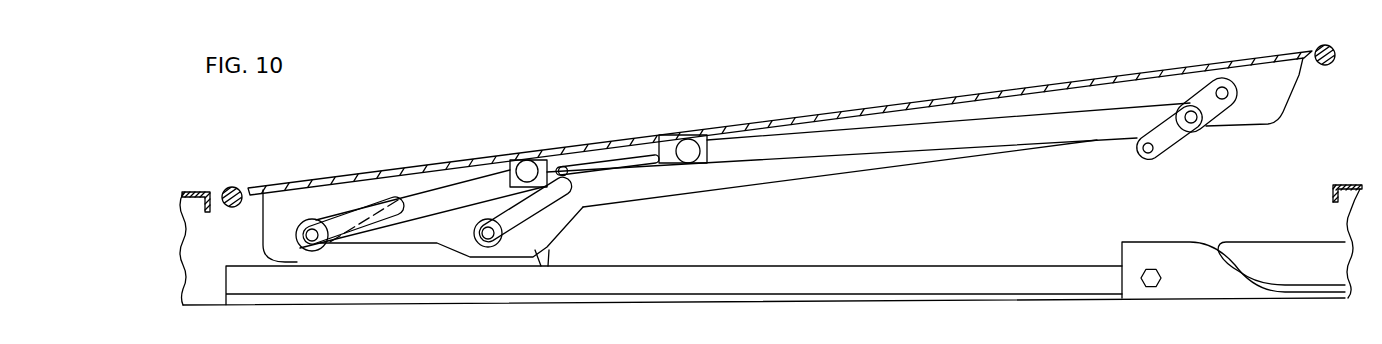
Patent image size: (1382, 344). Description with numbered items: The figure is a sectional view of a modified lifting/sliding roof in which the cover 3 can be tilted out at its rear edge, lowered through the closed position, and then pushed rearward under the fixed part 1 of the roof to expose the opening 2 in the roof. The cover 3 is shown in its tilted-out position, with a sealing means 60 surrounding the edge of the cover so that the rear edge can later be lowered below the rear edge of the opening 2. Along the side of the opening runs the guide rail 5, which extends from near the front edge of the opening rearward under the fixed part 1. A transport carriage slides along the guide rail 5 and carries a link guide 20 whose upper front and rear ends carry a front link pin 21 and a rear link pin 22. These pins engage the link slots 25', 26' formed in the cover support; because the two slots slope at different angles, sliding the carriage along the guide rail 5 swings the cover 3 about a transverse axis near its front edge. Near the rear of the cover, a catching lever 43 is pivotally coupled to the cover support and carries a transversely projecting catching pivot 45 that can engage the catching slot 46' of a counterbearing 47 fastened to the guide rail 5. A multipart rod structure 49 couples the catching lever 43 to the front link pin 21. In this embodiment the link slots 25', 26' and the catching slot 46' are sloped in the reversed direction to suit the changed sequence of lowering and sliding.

The cover 3 is at (905, 102).
The sealing means 60 is at (1330, 66).
The fixed part of the roof 1 is at (1346, 185).
The opening in the roof 2 is at (1276, 197).
The counterbearing 47 is at (1137, 250).
The catching slot 46' is at (1276, 290).
The guide rail 5 is at (813, 290).
The rod structure 49 is at (657, 188).
The catching lever 43 is at (1170, 140).
The catching pivot 45 is at (1140, 152).
The link guide 20 is at (411, 186).
The link slot 25' is at (353, 187).
The link pin 21 is at (312, 241).
The link pin 22 is at (488, 239).
The link slot 26' is at (544, 256).